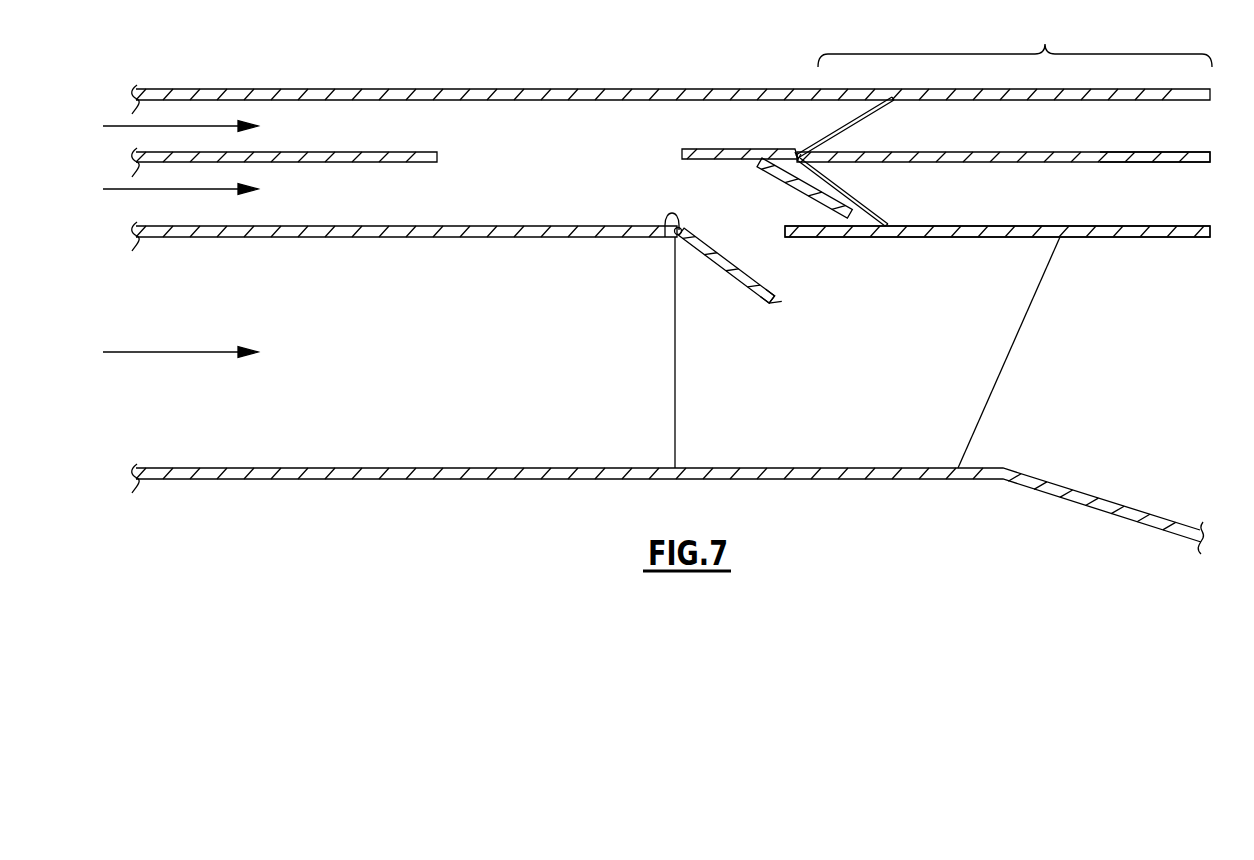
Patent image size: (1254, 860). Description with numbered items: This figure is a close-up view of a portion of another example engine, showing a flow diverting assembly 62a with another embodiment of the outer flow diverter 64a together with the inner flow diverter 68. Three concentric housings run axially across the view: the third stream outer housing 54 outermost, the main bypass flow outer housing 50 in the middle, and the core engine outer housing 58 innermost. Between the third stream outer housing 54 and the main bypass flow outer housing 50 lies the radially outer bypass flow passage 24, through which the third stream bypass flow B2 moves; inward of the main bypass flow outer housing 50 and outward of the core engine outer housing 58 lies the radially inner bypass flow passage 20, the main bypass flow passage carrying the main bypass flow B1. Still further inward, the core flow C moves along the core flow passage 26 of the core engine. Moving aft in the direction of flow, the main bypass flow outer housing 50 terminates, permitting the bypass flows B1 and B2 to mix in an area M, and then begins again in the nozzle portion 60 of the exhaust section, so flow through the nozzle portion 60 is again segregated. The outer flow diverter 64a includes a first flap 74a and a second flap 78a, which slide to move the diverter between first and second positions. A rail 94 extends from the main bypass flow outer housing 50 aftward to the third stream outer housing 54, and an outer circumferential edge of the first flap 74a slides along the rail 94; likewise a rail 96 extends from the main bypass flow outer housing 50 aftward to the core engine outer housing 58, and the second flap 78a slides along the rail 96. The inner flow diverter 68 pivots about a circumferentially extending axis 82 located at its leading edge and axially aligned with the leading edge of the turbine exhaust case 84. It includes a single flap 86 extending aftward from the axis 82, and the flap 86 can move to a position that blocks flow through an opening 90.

The radially inner bypass flow passage 20 is at (1127, 188).
The radially outer bypass flow passage 24 is at (1152, 115).
The core flow passage 26 is at (1155, 357).
The main bypass flow outer housing 50 is at (963, 154).
The third stream outer housing 54 is at (963, 91).
The core engine outer housing 58 is at (963, 228).
The nozzle portion 60 is at (1015, 38).
The flow diverting assembly 62a is at (612, 162).
The outer flow diverter 64a is at (713, 148).
The inner flow diverter 68 is at (752, 295).
The first flap 74a is at (761, 155).
The second flap 78a is at (780, 170).
The axis 82 is at (672, 231).
The turbine exhaust case 84 is at (983, 363).
The flap 86 is at (773, 295).
The opening 90 is at (760, 243).
The rail 94 is at (847, 116).
The rail 96 is at (816, 173).
The main bypass flow B1 is at (167, 183).
The third stream bypass flow B2 is at (209, 126).
The core flow C is at (155, 352).
The area M is at (535, 162).